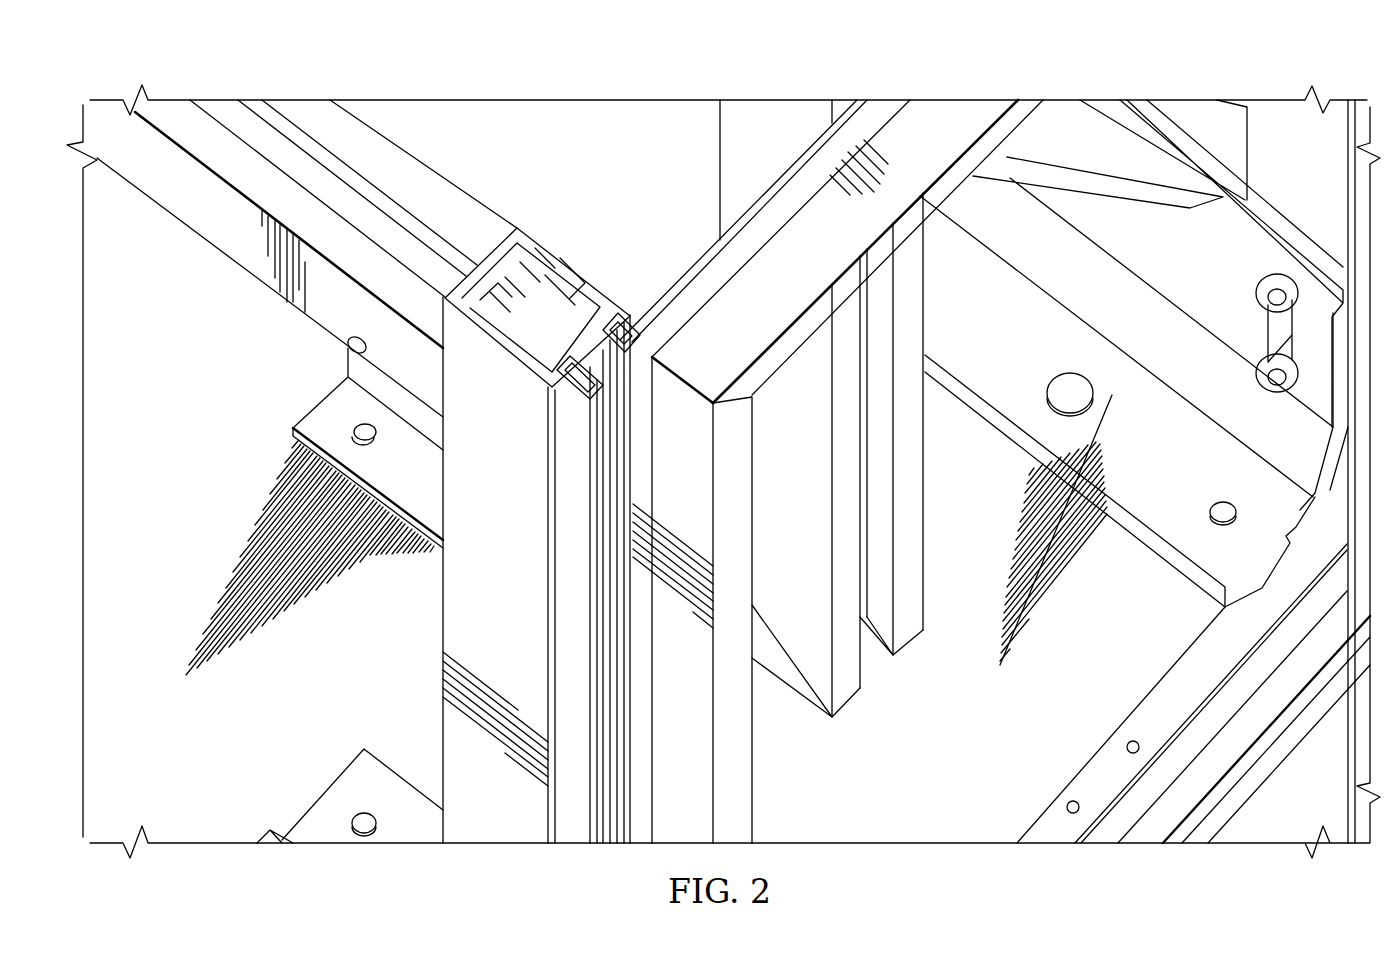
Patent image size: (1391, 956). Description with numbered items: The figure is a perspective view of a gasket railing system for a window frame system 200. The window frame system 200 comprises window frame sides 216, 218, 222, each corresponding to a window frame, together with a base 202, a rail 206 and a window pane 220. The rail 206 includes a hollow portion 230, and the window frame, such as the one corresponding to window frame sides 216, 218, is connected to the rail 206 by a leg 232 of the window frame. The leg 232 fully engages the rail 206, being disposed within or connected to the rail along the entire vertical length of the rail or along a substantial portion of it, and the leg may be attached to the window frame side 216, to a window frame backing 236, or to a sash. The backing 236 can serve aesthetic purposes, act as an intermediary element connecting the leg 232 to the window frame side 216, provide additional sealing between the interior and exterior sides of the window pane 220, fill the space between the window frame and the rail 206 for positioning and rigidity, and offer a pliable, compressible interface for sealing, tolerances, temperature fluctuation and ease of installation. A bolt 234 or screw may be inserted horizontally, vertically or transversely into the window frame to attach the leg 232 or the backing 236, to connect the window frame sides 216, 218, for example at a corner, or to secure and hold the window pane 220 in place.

The window frame system 200 is at (428, 62).
The base 202 is at (285, 714).
The rail 206 is at (443, 610).
The window frame side 216 is at (743, 750).
The window frame side 218 is at (948, 186).
The window pane 220 is at (1108, 676).
The window frame side 222 is at (226, 240).
The hollow portion 230 is at (540, 285).
The leg 232 is at (615, 305).
The bolt 234 is at (653, 363).
The backing portion 236 is at (703, 255).